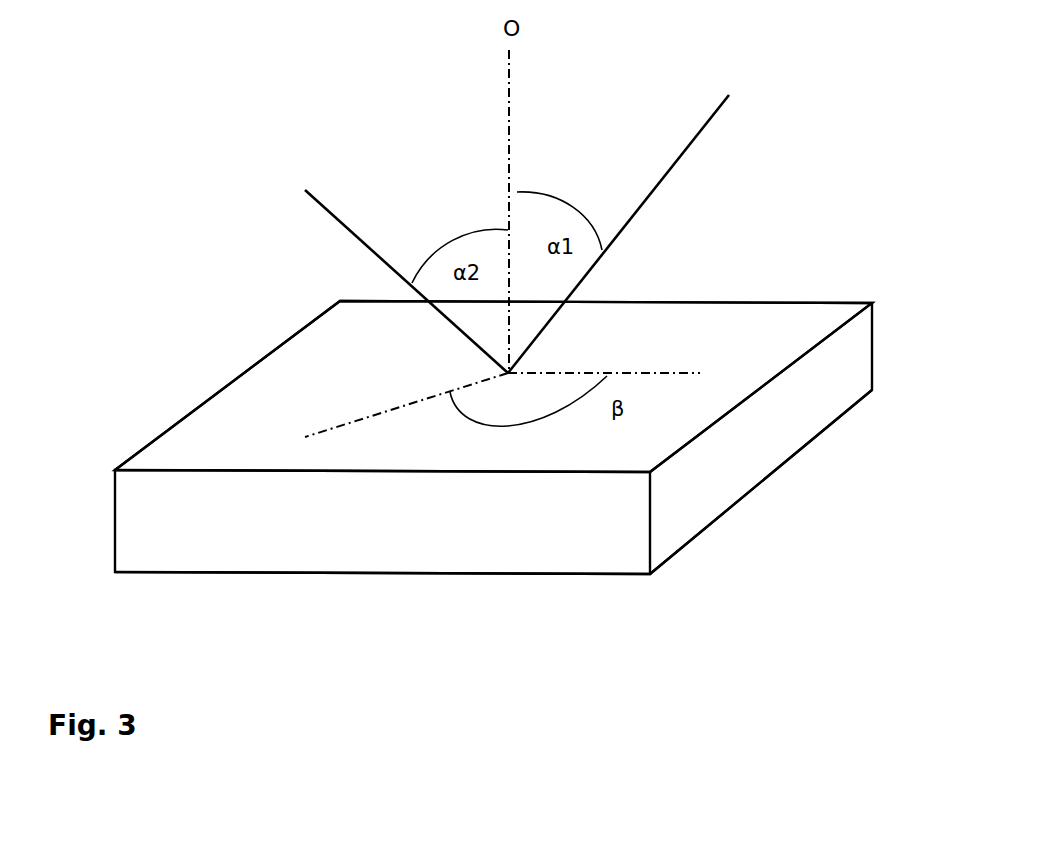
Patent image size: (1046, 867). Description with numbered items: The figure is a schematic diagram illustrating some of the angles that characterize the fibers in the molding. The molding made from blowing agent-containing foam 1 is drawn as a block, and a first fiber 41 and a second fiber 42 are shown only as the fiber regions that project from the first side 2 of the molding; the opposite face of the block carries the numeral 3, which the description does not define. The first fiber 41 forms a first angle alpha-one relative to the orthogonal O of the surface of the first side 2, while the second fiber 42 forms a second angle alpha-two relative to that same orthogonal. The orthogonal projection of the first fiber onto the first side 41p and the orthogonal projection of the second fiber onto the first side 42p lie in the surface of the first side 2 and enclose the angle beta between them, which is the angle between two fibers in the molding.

The molding made from blowing agent-containing foam 1 is at (805, 281).
The first side of the molding 2 is at (270, 410).
The bottom surface of the object 3 is at (606, 570).
The first fiber 41 is at (636, 220).
The second fiber 42 is at (388, 264).
The orthogonal projection of the first fiber onto the first side 41p is at (605, 359).
The orthogonal projection of the second fiber onto the first side 42p is at (406, 405).